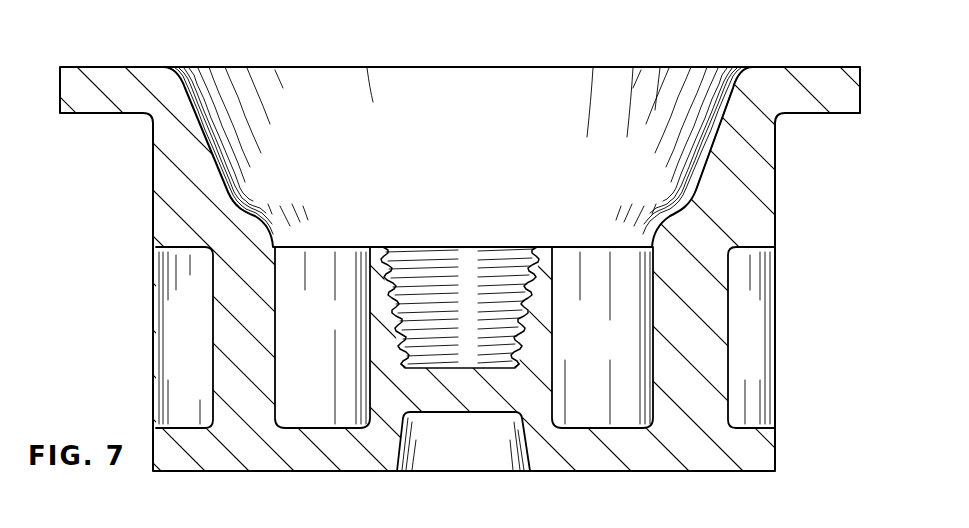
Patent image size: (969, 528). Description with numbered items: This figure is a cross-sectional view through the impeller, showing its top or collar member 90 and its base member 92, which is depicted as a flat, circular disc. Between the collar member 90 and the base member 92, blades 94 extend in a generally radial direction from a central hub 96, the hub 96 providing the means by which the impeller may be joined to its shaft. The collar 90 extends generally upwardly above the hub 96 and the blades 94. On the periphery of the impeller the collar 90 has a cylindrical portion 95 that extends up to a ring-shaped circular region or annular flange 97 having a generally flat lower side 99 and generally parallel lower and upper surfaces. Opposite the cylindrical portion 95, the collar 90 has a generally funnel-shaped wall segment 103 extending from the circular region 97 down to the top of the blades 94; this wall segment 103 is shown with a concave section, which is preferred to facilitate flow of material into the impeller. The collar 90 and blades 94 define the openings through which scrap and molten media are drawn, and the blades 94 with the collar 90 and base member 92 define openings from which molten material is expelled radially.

The collar member 90 is at (621, 131).
The base member 92 is at (645, 462).
The blades 94 is at (250, 353).
The cylindrical portion 95 is at (775, 188).
The central hub 96 is at (542, 337).
The annular flange 97 is at (810, 75).
The lower side 99 is at (823, 113).
The funnel-shaped wall segment 103 is at (720, 138).